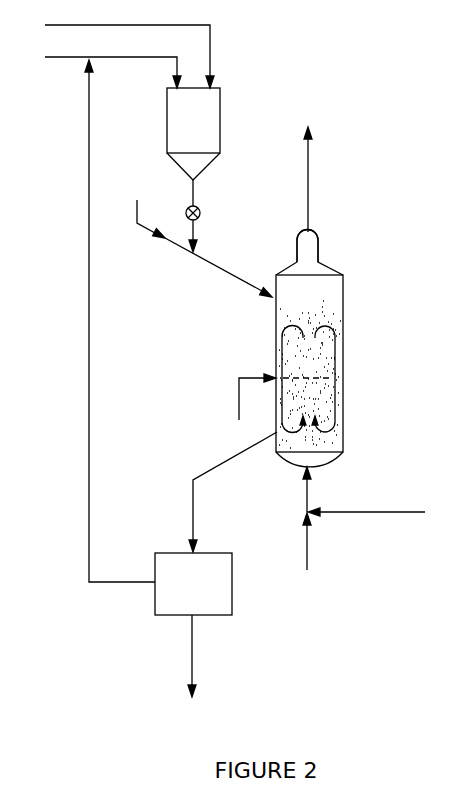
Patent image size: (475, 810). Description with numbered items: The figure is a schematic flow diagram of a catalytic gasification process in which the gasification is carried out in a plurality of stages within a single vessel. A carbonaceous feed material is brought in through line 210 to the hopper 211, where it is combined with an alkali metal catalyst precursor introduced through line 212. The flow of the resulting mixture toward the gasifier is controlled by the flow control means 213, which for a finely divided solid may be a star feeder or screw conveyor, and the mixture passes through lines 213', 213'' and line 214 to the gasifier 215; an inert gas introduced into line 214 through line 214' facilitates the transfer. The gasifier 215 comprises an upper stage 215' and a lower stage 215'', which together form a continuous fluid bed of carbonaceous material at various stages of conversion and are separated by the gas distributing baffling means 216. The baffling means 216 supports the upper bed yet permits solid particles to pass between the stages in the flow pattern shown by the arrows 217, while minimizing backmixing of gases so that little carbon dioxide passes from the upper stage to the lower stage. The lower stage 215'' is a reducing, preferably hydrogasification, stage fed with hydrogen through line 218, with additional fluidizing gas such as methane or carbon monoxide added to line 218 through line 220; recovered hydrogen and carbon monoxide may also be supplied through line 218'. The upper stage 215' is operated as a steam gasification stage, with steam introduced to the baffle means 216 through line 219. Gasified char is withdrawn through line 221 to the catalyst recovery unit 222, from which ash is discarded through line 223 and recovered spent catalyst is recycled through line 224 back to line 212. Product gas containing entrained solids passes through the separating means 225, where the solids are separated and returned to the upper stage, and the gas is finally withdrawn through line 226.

The feed line 210 is at (210, 46).
The hopper 211 is at (193, 134).
The line 212 is at (177, 70).
The flow control means 213 is at (173, 200).
The line 213' is at (228, 189).
The line 213'' is at (227, 236).
The line 214 is at (215, 267).
The line 214' is at (128, 225).
The gasifier 215 is at (276, 348).
The upper stage 215' is at (371, 307).
The lower stage 215'' is at (372, 433).
The gas distributing baffling means 216 is at (330, 378).
The arrows 217 is at (282, 352).
The line 218 is at (338, 489).
The line 218' is at (383, 527).
The line 219 is at (239, 403).
The line 220 is at (308, 556).
The line 221 is at (222, 462).
The catalyst recovery unit 222 is at (218, 575).
The line 223 is at (192, 648).
The line 224 is at (89, 432).
The solids separating means 225 is at (310, 250).
The line 226 is at (308, 172).